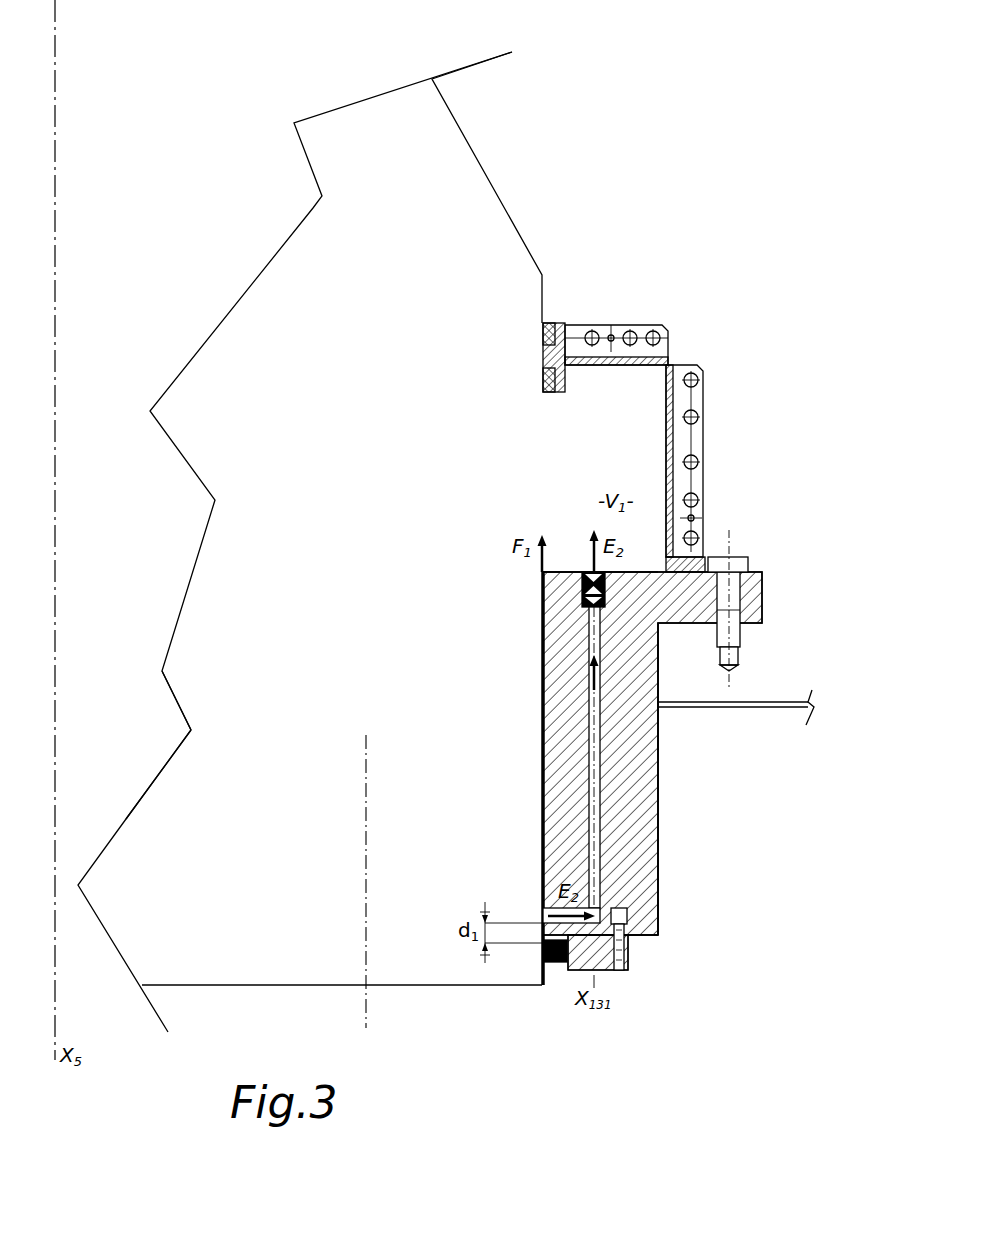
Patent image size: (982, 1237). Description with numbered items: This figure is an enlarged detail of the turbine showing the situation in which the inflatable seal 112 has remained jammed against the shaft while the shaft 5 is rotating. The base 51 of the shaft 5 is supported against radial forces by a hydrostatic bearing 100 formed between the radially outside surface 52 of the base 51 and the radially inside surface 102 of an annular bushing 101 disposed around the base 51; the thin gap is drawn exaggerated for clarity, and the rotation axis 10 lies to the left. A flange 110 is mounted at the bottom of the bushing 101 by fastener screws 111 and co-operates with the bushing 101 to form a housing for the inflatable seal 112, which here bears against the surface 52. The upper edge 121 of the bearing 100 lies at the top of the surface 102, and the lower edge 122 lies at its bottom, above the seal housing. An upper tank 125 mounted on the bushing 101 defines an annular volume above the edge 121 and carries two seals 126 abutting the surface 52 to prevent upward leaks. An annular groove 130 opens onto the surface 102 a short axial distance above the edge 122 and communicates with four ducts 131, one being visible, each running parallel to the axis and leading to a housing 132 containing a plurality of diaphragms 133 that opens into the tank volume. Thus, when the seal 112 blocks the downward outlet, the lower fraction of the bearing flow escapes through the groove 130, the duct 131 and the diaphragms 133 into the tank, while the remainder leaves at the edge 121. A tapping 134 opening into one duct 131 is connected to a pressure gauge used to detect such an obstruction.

The shaft 5 is at (330, 237).
The rotor axis 10 is at (366, 900).
The base of the shaft 51 is at (215, 780).
The radially outside surface of the base of the shaft 52 is at (548, 450).
The hydrostatic bearing 100 is at (538, 678).
The bushing 101 is at (657, 910).
The radially inside surface of the bushing 102 is at (538, 790).
The flange 110 is at (598, 968).
The fastener screws 111 is at (630, 945).
The inflatable seal 112 is at (568, 968).
The upper edge of the bearing 121 is at (545, 568).
The lower edge of the bearing 122 is at (535, 945).
The upper tank 125 is at (668, 365).
The seals 126 is at (543, 380).
The annular groove 130 is at (625, 870).
The duct 131 is at (605, 797).
The housing 132 is at (585, 607).
The diaphragms 133 is at (700, 556).
The tapping 134 is at (740, 700).